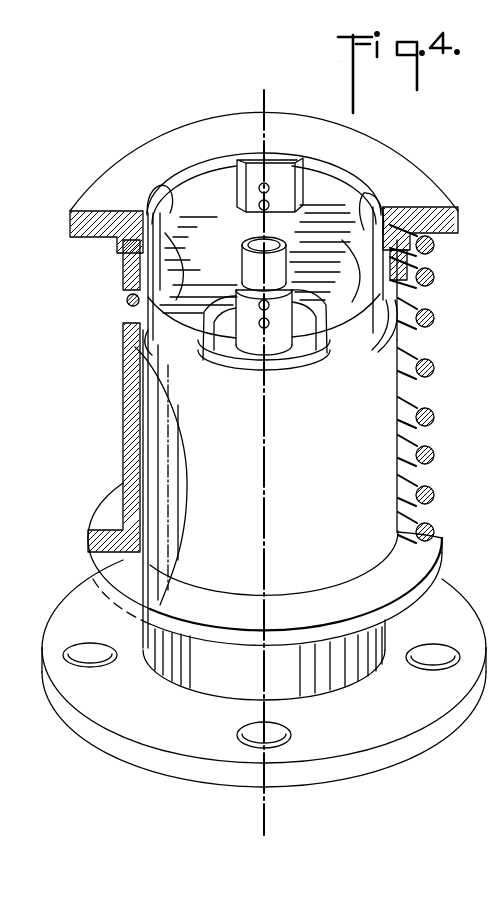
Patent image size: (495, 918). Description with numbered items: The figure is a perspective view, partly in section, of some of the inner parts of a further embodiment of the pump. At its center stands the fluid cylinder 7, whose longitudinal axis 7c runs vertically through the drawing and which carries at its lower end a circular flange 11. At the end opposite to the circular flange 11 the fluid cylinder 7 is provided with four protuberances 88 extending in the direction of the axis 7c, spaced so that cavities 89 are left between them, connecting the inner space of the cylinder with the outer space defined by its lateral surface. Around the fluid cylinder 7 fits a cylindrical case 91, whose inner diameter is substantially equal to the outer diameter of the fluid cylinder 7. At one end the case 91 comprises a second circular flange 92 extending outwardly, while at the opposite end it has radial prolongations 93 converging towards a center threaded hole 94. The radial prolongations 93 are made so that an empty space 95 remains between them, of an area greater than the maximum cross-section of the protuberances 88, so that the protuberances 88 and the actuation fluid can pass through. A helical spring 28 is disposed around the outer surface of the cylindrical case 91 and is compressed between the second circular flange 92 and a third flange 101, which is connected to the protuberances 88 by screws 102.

The third flange 101 is at (72, 222).
The screws 102 is at (125, 282).
The radial prolongations 93 is at (135, 343).
The empty space 95 is at (170, 255).
The cavities 89 is at (240, 193).
The center threaded hole 94 is at (240, 276).
The protuberances 88 is at (135, 295).
The cylindrical case 91 is at (380, 388).
The spring 28 is at (428, 422).
The second circular flange 92 is at (425, 560).
The axis of the cylinder 7c is at (268, 530).
The fluid cylinder 7 is at (225, 684).
The circular flange 11 is at (130, 733).